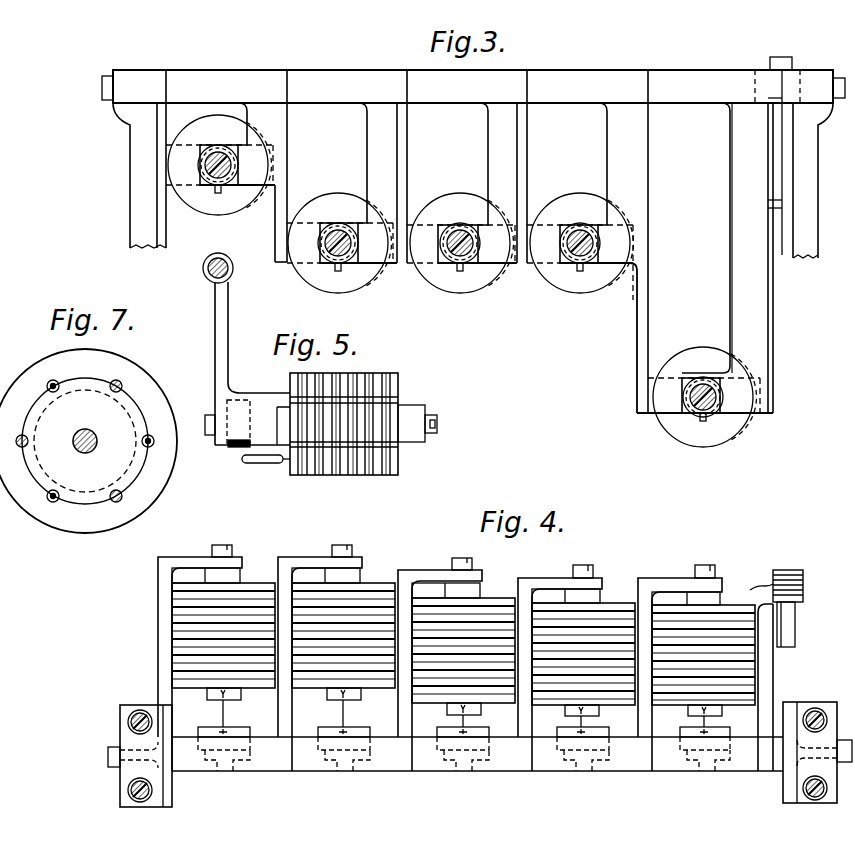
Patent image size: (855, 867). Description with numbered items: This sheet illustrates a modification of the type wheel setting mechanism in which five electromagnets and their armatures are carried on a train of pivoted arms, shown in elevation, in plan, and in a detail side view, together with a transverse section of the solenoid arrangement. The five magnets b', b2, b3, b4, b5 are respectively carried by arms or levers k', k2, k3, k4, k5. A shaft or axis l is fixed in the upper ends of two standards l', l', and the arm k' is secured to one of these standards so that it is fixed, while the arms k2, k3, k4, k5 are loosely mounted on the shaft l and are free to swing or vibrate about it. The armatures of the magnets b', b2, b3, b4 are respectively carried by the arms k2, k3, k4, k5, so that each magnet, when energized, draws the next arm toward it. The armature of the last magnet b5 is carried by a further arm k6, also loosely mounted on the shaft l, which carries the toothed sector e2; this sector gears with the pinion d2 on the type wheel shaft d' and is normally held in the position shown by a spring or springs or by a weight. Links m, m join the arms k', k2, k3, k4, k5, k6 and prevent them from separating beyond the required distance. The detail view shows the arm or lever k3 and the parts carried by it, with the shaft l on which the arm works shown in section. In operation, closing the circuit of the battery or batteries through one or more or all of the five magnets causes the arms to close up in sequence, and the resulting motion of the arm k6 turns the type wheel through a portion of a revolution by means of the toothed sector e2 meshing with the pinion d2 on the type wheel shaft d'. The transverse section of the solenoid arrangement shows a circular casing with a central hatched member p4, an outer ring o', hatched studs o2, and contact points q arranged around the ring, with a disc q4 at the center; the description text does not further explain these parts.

In FIG. 3, the shaft or axis l is at (95, 89).
In FIG. 5, the shaft or axis l is at (206, 268).
In FIG. 4, the shaft or axis l is at (467, 761).
In FIG. 3, the standard l' is at (473, 180).
In FIG. 4, the standard l' is at (466, 754).
In FIG. 3, the arm or lever k' is at (228, 182).
In FIG. 4, the arm or lever k' is at (200, 653).
In FIG. 3, the arm or lever k2 is at (275, 247).
In FIG. 4, the arm or lever k2 is at (288, 560).
In FIG. 3, the arm or lever k3 is at (448, 183).
In FIG. 5, the arm or lever k3 is at (215, 363).
In FIG. 4, the arm or lever k3 is at (398, 574).
In FIG. 3, the arm or lever k4 is at (567, 258).
In FIG. 4, the arm or lever k4 is at (518, 592).
In FIG. 3, the arm or lever k5 is at (696, 258).
In FIG. 4, the arm or lever k5 is at (638, 592).
In FIG. 3, the arm k6 is at (744, 238).
In FIG. 4, the arm k6 is at (774, 672).
In FIG. 3, the toothed sector e2 is at (781, 57).
In FIG. 4, the toothed sector e2 is at (795, 626).
In FIG. 3, the link m is at (220, 194).
In FIG. 5, the link m is at (256, 464).
In FIG. 4, the link m is at (221, 717).
In FIG. 3, the magnet b' is at (219, 173).
In FIG. 4, the magnet b' is at (223, 640).
In FIG. 3, the magnet b2 is at (372, 280).
In FIG. 4, the magnet b2 is at (376, 689).
In FIG. 3, the magnet b3 is at (482, 284).
In FIG. 5, the magnet b3 is at (331, 475).
In FIG. 4, the magnet b3 is at (496, 704).
In FIG. 3, the magnet b4 is at (598, 287).
In FIG. 4, the magnet b4 is at (617, 706).
In FIG. 3, the magnet b5 is at (735, 425).
In FIG. 4, the magnet b5 is at (737, 706).
In FIG. 4, the type wheel shaft d' is at (757, 573).
In FIG. 4, the pinion d2 is at (786, 568).
In FIG. 7, the ring o' is at (85, 429).
In FIG. 7, the hatched stud o2 is at (61, 443).
In FIG. 7, the contact point q is at (150, 447).
In FIG. 7, the disc q4 is at (53, 442).
In FIG. 7, the central pin p4 is at (90, 448).